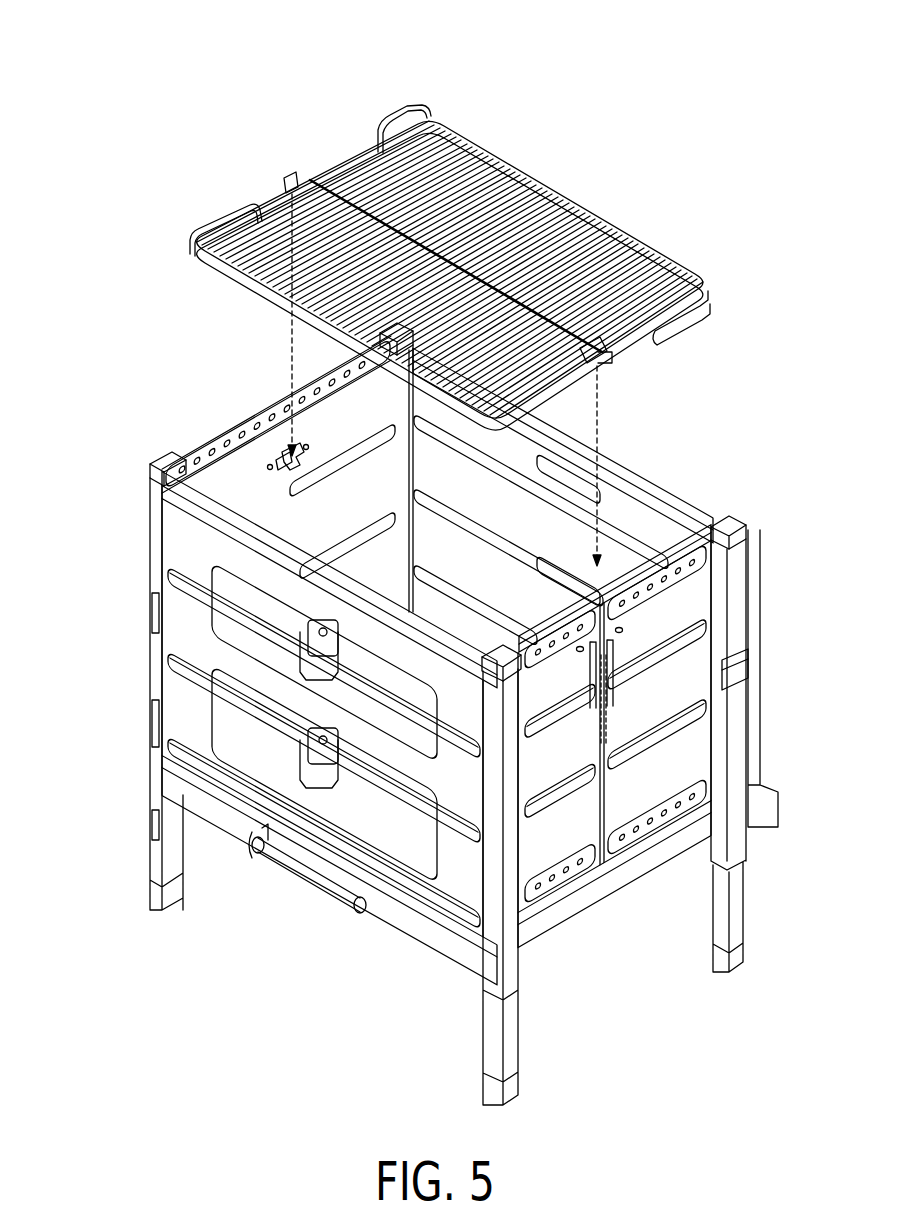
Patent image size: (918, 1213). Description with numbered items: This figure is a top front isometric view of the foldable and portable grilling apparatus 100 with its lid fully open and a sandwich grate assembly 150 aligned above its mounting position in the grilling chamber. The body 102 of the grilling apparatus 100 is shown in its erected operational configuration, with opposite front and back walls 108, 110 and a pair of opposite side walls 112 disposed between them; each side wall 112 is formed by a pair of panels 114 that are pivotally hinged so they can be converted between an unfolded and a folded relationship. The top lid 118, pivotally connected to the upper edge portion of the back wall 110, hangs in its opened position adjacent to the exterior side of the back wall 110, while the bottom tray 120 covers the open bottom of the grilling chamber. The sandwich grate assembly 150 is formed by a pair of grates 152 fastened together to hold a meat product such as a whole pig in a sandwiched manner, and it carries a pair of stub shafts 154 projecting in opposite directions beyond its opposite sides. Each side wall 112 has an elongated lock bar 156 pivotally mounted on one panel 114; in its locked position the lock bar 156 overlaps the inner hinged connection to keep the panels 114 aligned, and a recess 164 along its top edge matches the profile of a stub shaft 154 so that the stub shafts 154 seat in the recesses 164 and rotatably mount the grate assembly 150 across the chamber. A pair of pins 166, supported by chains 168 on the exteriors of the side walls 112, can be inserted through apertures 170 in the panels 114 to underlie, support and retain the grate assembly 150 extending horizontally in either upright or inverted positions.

The grilling apparatus 100 is at (691, 86).
The body 102 is at (177, 438).
The front wall 108 is at (156, 640).
The back wall 110 is at (716, 498).
The side wall 112 is at (220, 438).
The panel 114 is at (266, 501).
The top lid 118 is at (772, 706).
The bottom tray 120 is at (215, 833).
The sandwich grate assembly 150 is at (648, 206).
The grate 152 is at (500, 150).
The stub shaft 154 is at (293, 176).
The lock bar 156 is at (318, 462).
The recess 164 is at (296, 470).
The pin 166 is at (605, 700).
The chain 168 is at (581, 656).
The aperture 170 is at (583, 640).